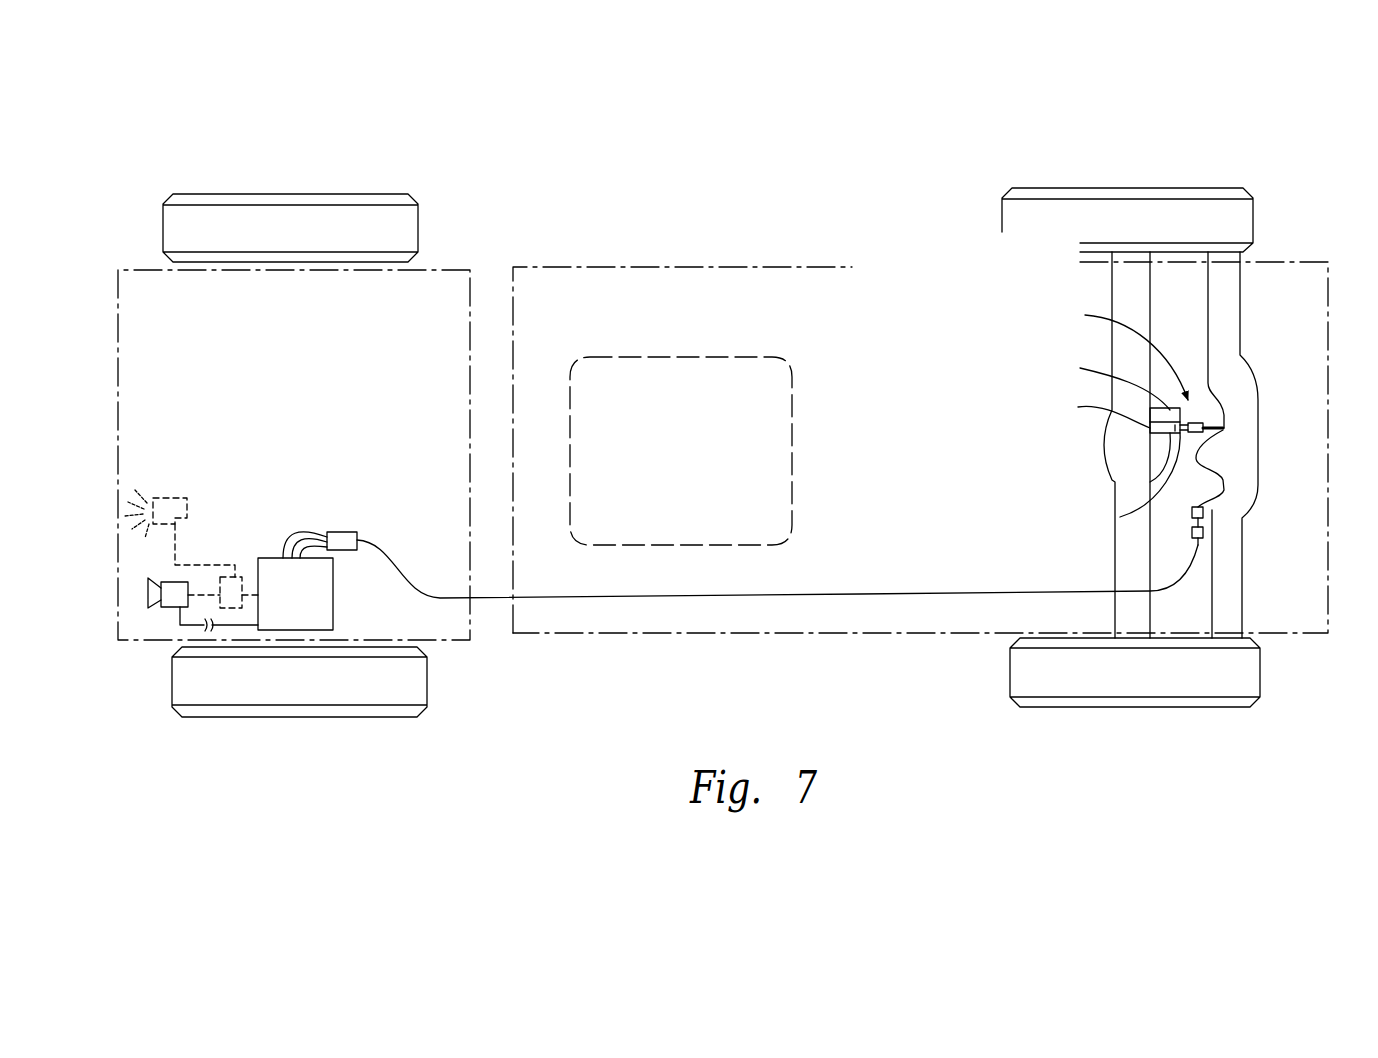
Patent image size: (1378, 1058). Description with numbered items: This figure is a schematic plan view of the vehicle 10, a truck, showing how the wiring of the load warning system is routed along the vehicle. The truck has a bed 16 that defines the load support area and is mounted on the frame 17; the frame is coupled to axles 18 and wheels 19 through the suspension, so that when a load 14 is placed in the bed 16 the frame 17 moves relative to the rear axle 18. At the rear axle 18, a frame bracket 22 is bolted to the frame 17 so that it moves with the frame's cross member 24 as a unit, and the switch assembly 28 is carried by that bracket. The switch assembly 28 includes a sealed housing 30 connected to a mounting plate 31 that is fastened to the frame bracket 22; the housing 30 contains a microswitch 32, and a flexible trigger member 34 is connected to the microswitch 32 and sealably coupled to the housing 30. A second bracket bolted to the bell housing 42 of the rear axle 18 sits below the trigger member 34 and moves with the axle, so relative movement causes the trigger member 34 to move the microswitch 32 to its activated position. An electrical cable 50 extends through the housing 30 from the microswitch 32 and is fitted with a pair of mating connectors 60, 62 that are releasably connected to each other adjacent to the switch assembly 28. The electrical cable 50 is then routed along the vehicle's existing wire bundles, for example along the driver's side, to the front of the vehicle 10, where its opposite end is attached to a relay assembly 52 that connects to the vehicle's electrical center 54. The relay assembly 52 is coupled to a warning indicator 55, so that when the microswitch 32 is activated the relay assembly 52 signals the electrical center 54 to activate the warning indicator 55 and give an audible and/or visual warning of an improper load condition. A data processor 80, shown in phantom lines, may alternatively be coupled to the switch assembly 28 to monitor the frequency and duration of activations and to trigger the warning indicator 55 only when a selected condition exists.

The vehicle 10 is at (873, 140).
The load 14 is at (650, 357).
The bed 16 is at (750, 303).
The frame 17 is at (1243, 292).
The axle 18 is at (1133, 283).
The wheels 19 is at (1125, 188).
The frame bracket 22 is at (1226, 433).
The cross member 24 is at (1235, 322).
The switch assembly 28 is at (1197, 414).
The sealed housing 30 is at (1203, 423).
The microswitch 32 is at (1204, 425).
The mounting plate 31 is at (1226, 472).
The trigger member 34 is at (1120, 517).
The bell housing 42 is at (1100, 453).
The electrical cable 50 is at (892, 592).
The relay assembly 52 is at (348, 552).
The electrical center 54 is at (292, 632).
The warning indicator 55 is at (165, 497).
The mating connector 60 is at (1203, 512).
The mating connector 62 is at (1203, 537).
The data processor 80 is at (235, 577).